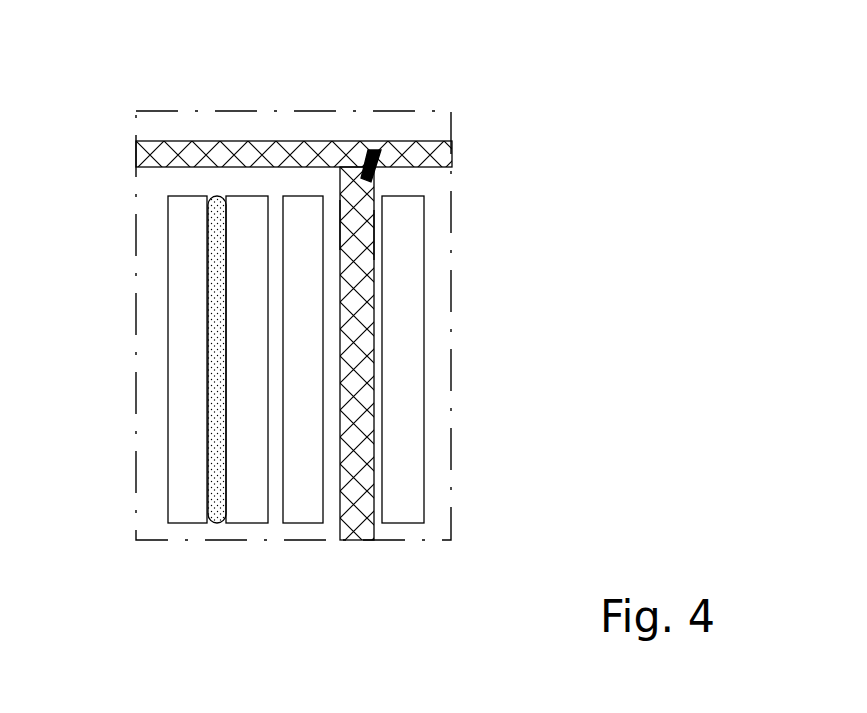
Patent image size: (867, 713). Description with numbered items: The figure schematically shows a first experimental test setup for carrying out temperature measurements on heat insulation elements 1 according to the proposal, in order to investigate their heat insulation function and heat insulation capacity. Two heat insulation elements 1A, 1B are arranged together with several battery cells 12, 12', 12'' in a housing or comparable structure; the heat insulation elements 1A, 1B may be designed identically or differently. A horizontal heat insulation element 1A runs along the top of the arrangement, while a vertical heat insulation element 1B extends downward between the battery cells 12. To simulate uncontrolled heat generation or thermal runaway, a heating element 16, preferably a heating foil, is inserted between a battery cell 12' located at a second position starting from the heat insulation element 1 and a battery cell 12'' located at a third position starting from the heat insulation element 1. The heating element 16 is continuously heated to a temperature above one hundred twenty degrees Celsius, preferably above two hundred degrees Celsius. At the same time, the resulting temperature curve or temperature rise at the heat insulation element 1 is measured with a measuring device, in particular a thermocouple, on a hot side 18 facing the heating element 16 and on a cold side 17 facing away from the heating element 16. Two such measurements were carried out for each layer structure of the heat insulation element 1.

The heat insulation element 1 is at (368, 167).
The heat insulation element 1A is at (262, 148).
The heat insulation element 1B is at (360, 498).
The battery cell 12 is at (352, 418).
The battery cell 12' is at (244, 418).
The battery cell 12'' is at (185, 418).
The heating element 16 is at (208, 238).
The cold side 17 is at (374, 235).
The hot side 18 is at (340, 223).